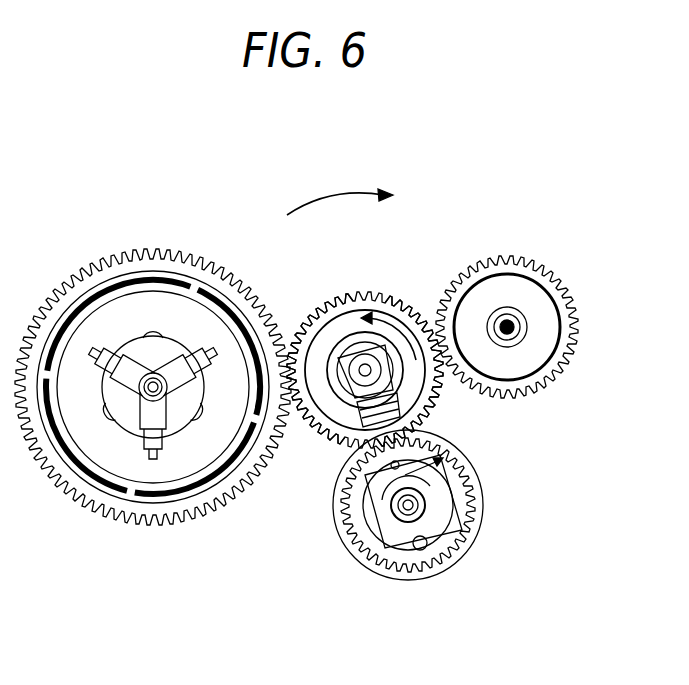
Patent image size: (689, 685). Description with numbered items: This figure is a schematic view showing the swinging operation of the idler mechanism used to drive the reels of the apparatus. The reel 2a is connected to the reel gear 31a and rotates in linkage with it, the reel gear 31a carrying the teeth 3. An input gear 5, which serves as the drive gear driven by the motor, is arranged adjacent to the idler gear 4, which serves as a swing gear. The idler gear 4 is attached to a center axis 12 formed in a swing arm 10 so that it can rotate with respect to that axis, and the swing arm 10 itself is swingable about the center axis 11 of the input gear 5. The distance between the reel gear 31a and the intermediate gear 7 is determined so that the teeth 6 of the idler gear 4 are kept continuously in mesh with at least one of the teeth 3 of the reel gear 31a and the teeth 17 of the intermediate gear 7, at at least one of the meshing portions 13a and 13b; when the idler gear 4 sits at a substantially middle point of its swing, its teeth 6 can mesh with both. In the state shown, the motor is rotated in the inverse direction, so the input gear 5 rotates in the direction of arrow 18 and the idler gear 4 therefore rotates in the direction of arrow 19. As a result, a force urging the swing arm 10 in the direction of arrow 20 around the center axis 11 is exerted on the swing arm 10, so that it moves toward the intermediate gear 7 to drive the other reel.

The arrow 20 is at (328, 196).
The teeth of the reel gear 3 is at (201, 258).
The reel gear 31a is at (80, 372).
The reel 2a is at (153, 385).
The teeth of the idler gear 6 is at (368, 297).
The meshing portion 13a is at (285, 329).
The meshing portion 13b is at (434, 314).
The idler gear 4 is at (349, 320).
The center axis 12 is at (336, 350).
The arrow 19 is at (397, 317).
The teeth of the intermediate gear 17 is at (562, 284).
The intermediate gear 7 is at (518, 292).
The center axis 11 is at (364, 567).
The arrow 18 is at (447, 462).
The input gear 5 is at (442, 527).
The swing arm 10 is at (468, 490).